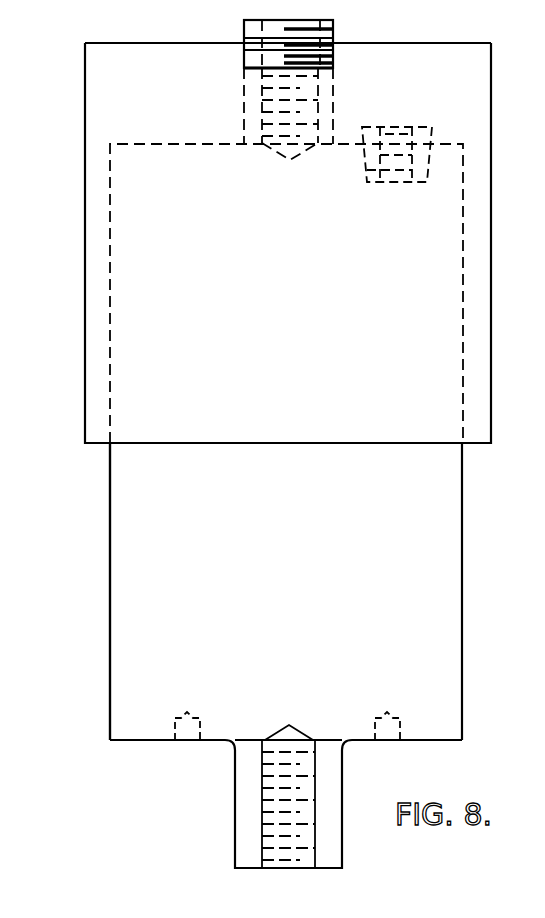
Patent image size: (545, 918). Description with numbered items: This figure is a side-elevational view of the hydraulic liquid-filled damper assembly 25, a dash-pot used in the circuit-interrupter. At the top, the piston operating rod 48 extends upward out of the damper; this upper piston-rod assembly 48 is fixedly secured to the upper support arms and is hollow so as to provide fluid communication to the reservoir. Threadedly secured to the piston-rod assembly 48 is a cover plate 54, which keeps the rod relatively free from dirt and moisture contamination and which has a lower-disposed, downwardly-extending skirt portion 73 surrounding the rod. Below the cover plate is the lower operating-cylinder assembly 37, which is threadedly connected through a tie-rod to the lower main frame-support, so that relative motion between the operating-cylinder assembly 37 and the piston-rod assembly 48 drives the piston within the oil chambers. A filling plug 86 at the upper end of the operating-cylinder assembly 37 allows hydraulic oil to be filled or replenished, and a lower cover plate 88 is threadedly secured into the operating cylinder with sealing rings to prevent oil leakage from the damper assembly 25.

The cover plate 54 is at (190, 43).
The piston operating rod 48 is at (334, 31).
The filling plug 86 is at (391, 180).
The skirt portion 73 is at (493, 302).
The operating cylinder assembly 37 is at (109, 598).
The damper assembly 25 is at (463, 606).
The lower cover plate 88 is at (145, 742).